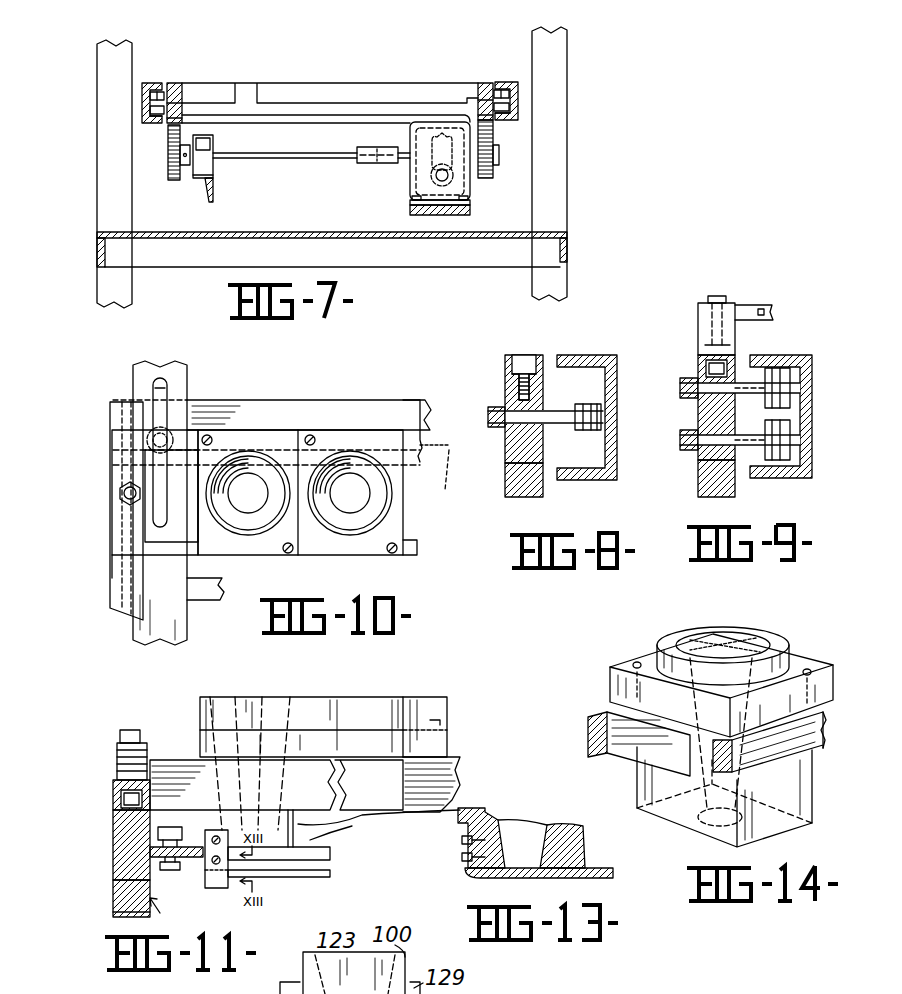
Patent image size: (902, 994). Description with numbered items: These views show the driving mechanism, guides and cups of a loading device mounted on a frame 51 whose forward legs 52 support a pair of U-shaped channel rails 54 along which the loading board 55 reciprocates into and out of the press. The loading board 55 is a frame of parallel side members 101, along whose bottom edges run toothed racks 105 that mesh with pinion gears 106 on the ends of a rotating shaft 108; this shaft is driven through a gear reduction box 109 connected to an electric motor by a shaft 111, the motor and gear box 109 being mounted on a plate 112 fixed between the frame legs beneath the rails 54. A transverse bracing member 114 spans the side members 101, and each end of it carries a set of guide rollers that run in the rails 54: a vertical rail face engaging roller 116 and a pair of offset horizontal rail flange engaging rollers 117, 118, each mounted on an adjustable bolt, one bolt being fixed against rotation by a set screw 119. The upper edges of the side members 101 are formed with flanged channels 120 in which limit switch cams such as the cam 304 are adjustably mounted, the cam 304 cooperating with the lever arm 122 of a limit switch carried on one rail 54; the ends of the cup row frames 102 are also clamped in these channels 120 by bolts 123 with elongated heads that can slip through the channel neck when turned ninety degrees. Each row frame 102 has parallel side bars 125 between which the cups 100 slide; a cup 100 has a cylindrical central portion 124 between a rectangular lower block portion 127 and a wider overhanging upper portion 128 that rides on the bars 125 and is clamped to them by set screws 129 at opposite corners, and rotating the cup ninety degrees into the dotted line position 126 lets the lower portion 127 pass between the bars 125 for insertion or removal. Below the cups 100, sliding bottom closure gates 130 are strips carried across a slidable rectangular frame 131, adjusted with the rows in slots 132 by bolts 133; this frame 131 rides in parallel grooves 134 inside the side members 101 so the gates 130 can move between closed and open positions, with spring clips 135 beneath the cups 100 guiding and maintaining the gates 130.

In FIG. 7, the frame 51 is at (576, 250).
In FIG. 7, the forward legs 52 is at (105, 194).
In FIG. 7, the horizontal rails 54 is at (158, 82).
In FIG. 8, the horizontal rails 54 is at (593, 338).
In FIG. 9, the horizontal rails 54 is at (792, 355).
In FIG. 7, the loading board 55 is at (203, 80).
In FIG. 11, the loading board 55 is at (171, 913).
In FIG. 10, the cups 100 is at (268, 556).
In FIG. 11, the cups 100 is at (322, 688).
In FIG. 13, the cups 100 is at (575, 850).
In FIG. 14, the cups 100 is at (673, 629).
In FIG. 7, the parallel side members 101 is at (172, 123).
In FIG. 8, the parallel side members 101 is at (538, 442).
In FIG. 9, the parallel side members 101 is at (698, 413).
In FIG. 10, the parallel side members 101 is at (112, 578).
In FIG. 11, the parallel side members 101 is at (113, 832).
In FIG. 10, the cup row frames 102 is at (418, 558).
In FIG. 11, the cup row frames 102 is at (117, 762).
In FIG. 7, the toothed rack 105 is at (168, 121).
In FIG. 8, the toothed rack 105 is at (543, 483).
In FIG. 9, the toothed rack 105 is at (705, 480).
In FIG. 11, the toothed rack 105 is at (113, 898).
In FIG. 7, the pinion gears 106 is at (170, 178).
In FIG. 7, the rotating shaft 108 is at (252, 158).
In FIG. 7, the gear reduction box 109 is at (410, 176).
In FIG. 7, the shaft 111 is at (438, 178).
In FIG. 7, the plate 112 is at (470, 228).
In FIG. 7, the transverse bracing member 114 is at (282, 92).
In FIG. 7, the vertical rail face engaging roller 116 is at (148, 107).
In FIG. 8, the vertical rail face engaging roller 116 is at (600, 412).
In FIG. 7, the horizontal rail flange engaging roller 117 is at (148, 94).
In FIG. 9, the horizontal rail flange engaging roller 117 is at (770, 370).
In FIG. 7, the horizontal rail flange engaging roller 118 is at (152, 120).
In FIG. 9, the horizontal rail flange engaging roller 118 is at (770, 462).
In FIG. 8, the set screw 119 is at (518, 388).
In FIG. 7, the flanged grooves or channels 120 is at (172, 82).
In FIG. 8, the flanged grooves or channels 120 is at (523, 357).
In FIG. 9, the flanged grooves or channels 120 is at (707, 370).
In FIG. 10, the flanged grooves or channels 120 is at (128, 612).
In FIG. 11, the flanged grooves or channels 120 is at (123, 810).
In FIG. 9, the lever arm 122 is at (750, 305).
In FIG. 9, the bolts 123 is at (710, 298).
In FIG. 10, the bolts 123 is at (119, 495).
In FIG. 11, the bolts 123 is at (137, 730).
In FIG. 10, the central portions 124 is at (290, 553).
In FIG. 11, the central portions 124 is at (379, 800).
In FIG. 14, the central portions 124 is at (688, 750).
In FIG. 10, the side bars 125 is at (410, 428).
In FIG. 11, the side bars 125 is at (256, 798).
In FIG. 14, the side bars 125 is at (605, 716).
In FIG. 11, the dotted line positions 126 is at (455, 688).
In FIG. 14, the lower block portions 127 is at (745, 850).
In FIG. 11, the upper portions 128 is at (405, 742).
In FIG. 14, the upper portions 128 is at (610, 680).
In FIG. 14, the set screws 129 is at (633, 662).
In FIG. 10, the bottom closure gates 130 is at (258, 406).
In FIG. 11, the bottom closure gates 130 is at (322, 878).
In FIG. 13, the bottom closure gates 130 is at (605, 878).
In FIG. 10, the slidable rectangular frame 131 is at (150, 376).
In FIG. 11, the slidable rectangular frame 131 is at (328, 856).
In FIG. 10, the slots 132 is at (156, 389).
In FIG. 10, the bolts 133 is at (152, 420).
In FIG. 11, the bolts 133 is at (198, 807).
In FIG. 11, the parallel grooves 134 is at (150, 856).
In FIG. 11, the spring clips 135 is at (217, 888).
In FIG. 13, the spring clips 135 is at (470, 877).
In FIG. 9, the cam 304 is at (698, 313).